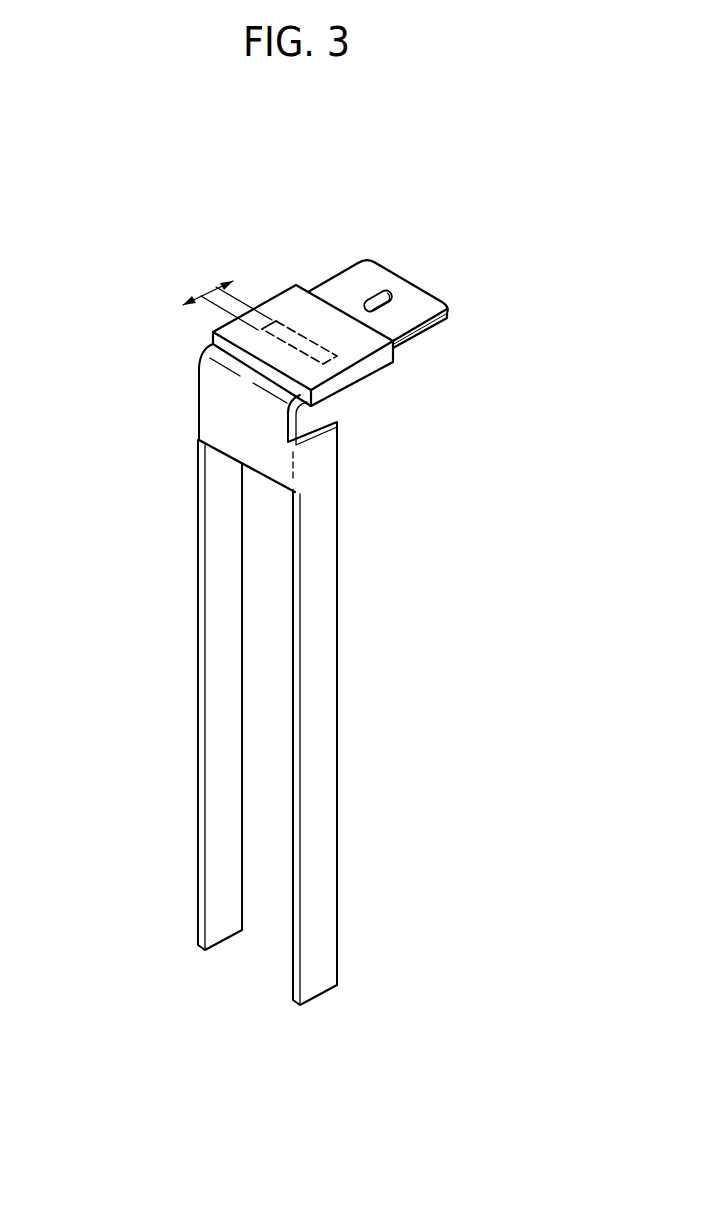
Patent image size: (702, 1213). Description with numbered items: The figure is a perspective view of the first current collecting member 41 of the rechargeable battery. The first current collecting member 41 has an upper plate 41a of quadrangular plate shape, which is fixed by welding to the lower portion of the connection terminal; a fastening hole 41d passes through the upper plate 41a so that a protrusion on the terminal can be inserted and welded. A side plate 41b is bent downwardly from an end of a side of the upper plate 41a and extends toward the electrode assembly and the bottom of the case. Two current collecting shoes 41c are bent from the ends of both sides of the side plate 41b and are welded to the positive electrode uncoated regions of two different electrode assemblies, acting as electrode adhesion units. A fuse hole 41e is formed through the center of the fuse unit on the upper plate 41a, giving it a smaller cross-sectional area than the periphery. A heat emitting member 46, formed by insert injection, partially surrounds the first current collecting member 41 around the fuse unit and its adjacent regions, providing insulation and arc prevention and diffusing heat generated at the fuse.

The first current collecting member 41 is at (331, 246).
The upper plate 41a is at (427, 304).
The side plate 41b is at (243, 418).
The current collecting shoes 41c is at (318, 730).
The fastening hole 41d is at (380, 291).
The fuse hole 41e is at (267, 343).
The heat emitting member 46 is at (355, 343).